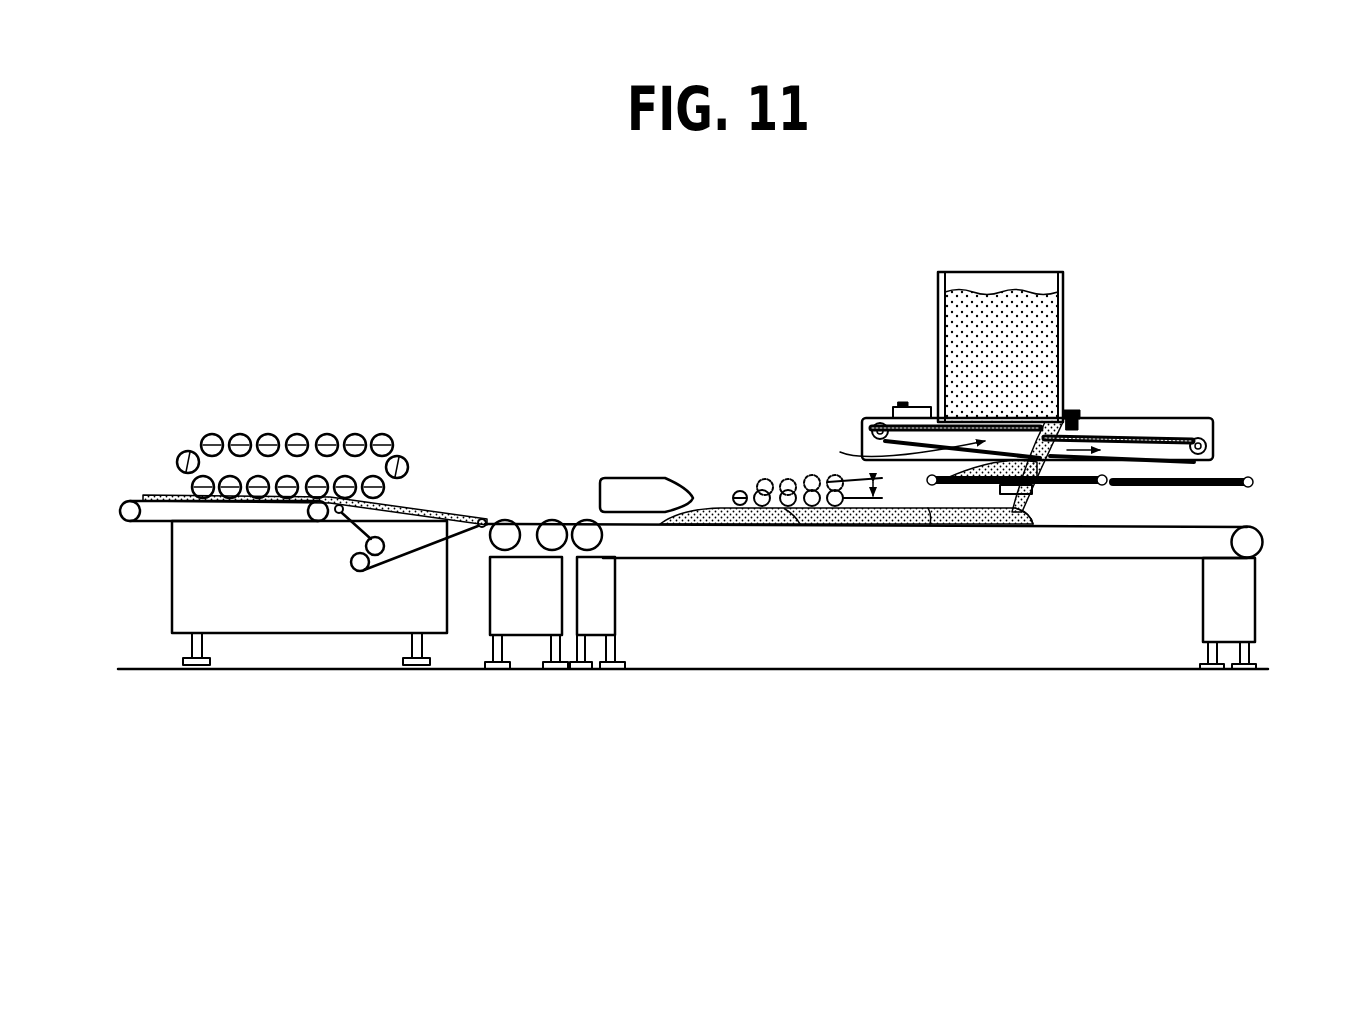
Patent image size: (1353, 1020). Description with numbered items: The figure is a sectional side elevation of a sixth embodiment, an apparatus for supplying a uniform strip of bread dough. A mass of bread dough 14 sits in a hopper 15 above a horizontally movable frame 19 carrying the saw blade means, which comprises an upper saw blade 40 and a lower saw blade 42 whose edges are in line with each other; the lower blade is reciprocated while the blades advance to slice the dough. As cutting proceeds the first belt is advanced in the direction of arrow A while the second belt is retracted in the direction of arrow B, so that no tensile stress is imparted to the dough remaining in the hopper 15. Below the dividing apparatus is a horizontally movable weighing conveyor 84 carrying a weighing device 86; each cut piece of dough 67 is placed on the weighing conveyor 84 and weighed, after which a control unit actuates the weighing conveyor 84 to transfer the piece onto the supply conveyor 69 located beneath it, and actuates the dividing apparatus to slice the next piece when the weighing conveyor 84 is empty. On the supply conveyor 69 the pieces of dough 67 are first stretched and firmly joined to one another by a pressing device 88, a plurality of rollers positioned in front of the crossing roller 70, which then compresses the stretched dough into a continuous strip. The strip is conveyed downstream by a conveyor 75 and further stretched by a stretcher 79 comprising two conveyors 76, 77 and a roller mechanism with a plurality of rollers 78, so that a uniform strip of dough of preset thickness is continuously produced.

The bread dough 14 is at (1011, 292).
The hopper 15 is at (1063, 308).
The frame 19 is at (1152, 418).
The upper saw blade 40 is at (1050, 420).
The lower saw blade 42 is at (1027, 528).
The pieces of dough 67 is at (863, 527).
The supply conveyor 69 is at (1225, 523).
The crossing roller 70 is at (627, 477).
The conveyor 75 is at (529, 557).
The conveyor 76 is at (422, 555).
The conveyor 77 is at (258, 522).
The rollers 78 is at (409, 465).
The stretcher 79 is at (310, 419).
The weighing conveyor 84 is at (1085, 485).
The weighing device 86 is at (1030, 490).
The pressing device 88 is at (776, 469).
The arrow A is at (899, 449).
The arrow B is at (1085, 445).